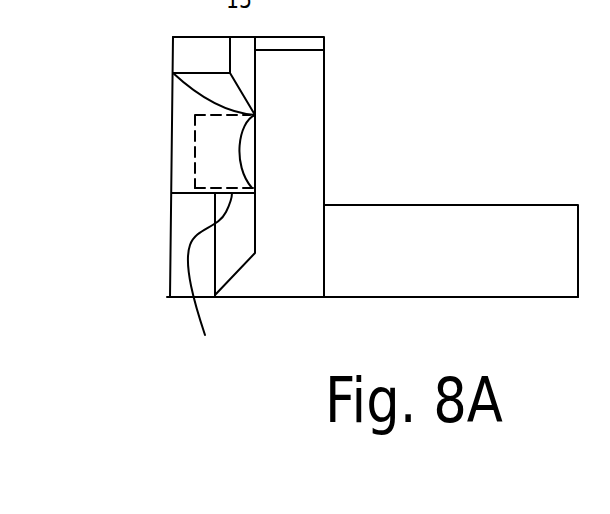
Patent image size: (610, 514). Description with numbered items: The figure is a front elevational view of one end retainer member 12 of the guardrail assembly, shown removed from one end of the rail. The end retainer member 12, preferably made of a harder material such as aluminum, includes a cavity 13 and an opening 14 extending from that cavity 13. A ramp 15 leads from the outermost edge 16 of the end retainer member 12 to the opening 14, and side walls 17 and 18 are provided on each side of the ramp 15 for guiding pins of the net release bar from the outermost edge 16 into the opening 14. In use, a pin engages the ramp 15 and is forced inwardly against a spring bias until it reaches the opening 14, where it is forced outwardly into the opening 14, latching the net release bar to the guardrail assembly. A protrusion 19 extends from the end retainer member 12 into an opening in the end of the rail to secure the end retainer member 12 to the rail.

The end retainer member 12 is at (360, 66).
The cavity 13 is at (297, 148).
The opening 14 is at (192, 182).
The ramp 15 is at (180, 152).
The outermost edge 16 is at (172, 127).
The side wall 17 is at (215, 274).
The side wall 18 is at (213, 84).
The protrusion 19 is at (443, 227).